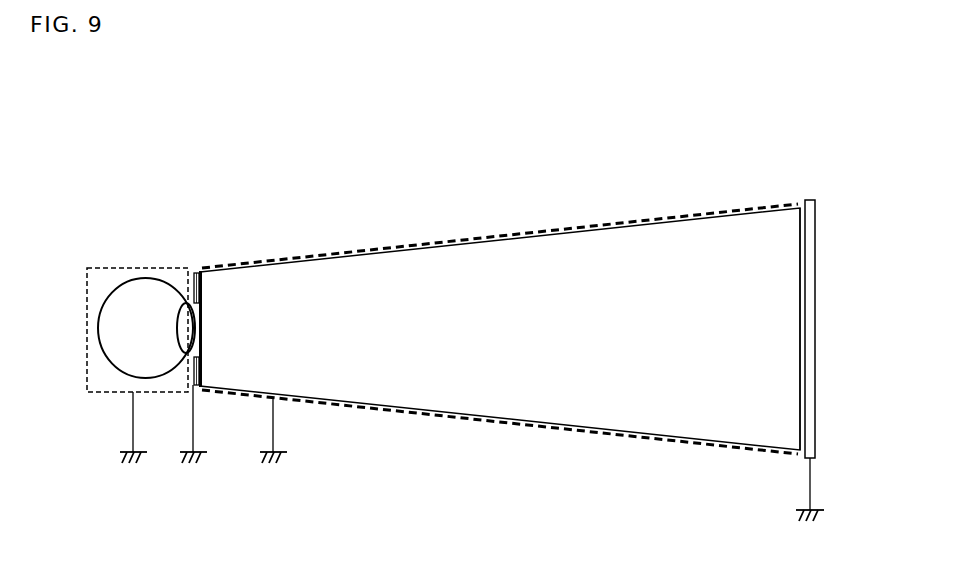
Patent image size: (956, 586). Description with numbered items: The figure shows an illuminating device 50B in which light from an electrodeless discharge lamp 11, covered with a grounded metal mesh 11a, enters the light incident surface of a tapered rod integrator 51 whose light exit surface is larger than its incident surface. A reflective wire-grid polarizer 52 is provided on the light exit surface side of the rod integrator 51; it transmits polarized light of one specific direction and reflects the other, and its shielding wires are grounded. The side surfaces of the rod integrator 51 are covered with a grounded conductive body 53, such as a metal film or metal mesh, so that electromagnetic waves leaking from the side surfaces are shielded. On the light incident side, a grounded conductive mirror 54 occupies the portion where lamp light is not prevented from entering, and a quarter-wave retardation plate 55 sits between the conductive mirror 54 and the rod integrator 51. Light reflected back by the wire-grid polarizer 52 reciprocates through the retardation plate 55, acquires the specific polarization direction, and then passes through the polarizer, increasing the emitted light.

The discharge lamp 11 is at (145, 290).
The metal mesh 11a is at (92, 393).
The illuminating device 50B is at (354, 181).
The rod integrator 51 is at (448, 258).
The wire-grid polarizer 52 is at (810, 200).
The conductive body 53 is at (578, 228).
The conductive mirror 54 is at (195, 273).
The retardation plate 55 is at (201, 271).